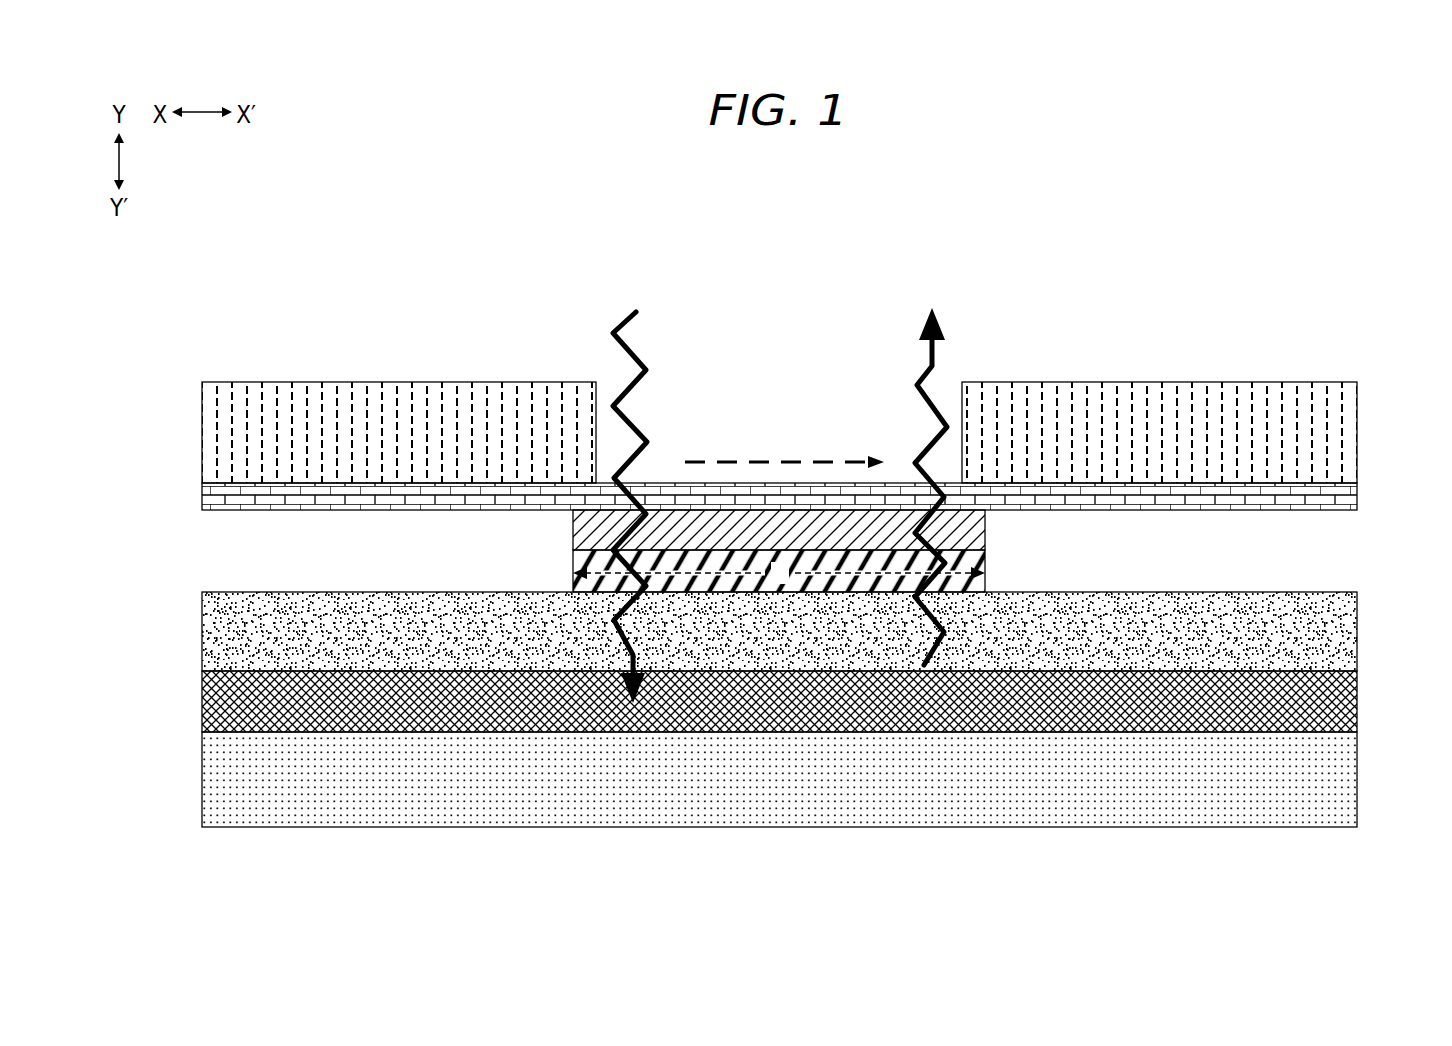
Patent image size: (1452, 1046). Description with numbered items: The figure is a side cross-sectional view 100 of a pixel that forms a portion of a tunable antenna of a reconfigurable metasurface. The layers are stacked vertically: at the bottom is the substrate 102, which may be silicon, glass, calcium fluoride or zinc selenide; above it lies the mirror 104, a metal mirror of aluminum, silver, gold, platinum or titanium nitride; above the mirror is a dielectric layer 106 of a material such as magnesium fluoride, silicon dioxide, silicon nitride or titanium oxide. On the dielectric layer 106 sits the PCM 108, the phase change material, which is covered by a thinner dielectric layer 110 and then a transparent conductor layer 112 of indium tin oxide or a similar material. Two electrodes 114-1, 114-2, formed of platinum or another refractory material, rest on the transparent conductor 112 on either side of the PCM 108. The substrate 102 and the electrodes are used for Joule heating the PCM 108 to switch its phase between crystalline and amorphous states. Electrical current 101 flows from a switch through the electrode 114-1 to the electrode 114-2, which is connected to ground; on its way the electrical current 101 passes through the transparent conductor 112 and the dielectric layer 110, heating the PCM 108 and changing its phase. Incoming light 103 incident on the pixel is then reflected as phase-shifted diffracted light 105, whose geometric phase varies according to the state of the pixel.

The side cross-sectional view 100 is at (798, 175).
The electrical current 101 is at (797, 452).
The substrate 102 is at (202, 778).
The incoming light 103 is at (612, 296).
The mirror 104 is at (202, 698).
The phase-shifted diffracted light 105 is at (912, 296).
The dielectric layer 106 is at (202, 628).
The PCM 108 is at (573, 568).
The dielectric layer 110 is at (985, 530).
The transparent conductor layer 112 is at (202, 493).
The electrode 114-1 is at (202, 432).
The electrode 114-2 is at (1357, 438).